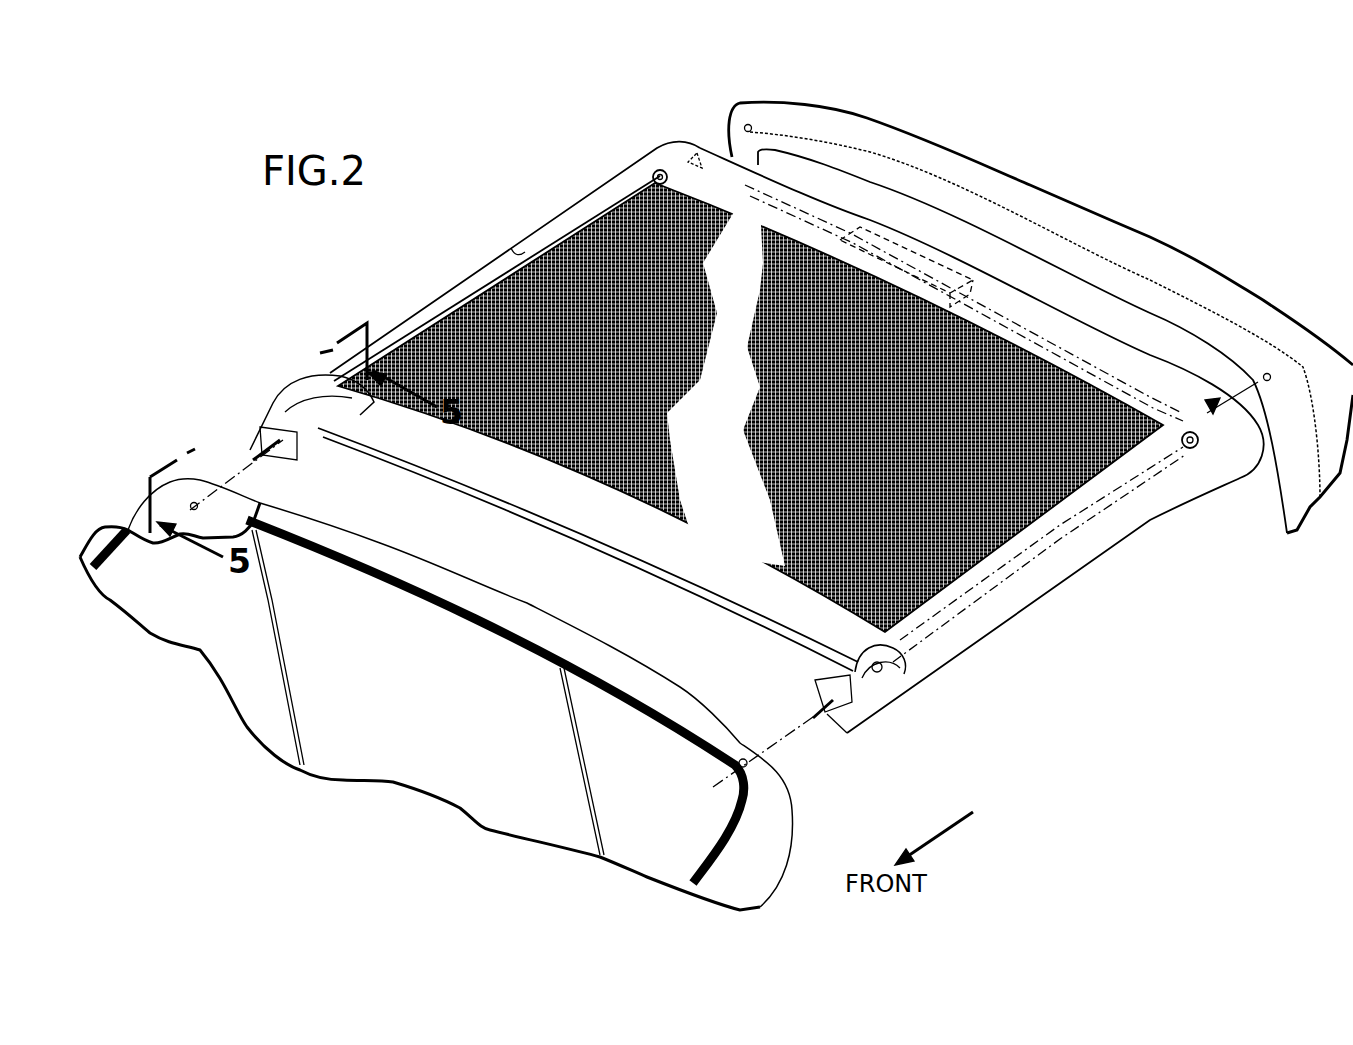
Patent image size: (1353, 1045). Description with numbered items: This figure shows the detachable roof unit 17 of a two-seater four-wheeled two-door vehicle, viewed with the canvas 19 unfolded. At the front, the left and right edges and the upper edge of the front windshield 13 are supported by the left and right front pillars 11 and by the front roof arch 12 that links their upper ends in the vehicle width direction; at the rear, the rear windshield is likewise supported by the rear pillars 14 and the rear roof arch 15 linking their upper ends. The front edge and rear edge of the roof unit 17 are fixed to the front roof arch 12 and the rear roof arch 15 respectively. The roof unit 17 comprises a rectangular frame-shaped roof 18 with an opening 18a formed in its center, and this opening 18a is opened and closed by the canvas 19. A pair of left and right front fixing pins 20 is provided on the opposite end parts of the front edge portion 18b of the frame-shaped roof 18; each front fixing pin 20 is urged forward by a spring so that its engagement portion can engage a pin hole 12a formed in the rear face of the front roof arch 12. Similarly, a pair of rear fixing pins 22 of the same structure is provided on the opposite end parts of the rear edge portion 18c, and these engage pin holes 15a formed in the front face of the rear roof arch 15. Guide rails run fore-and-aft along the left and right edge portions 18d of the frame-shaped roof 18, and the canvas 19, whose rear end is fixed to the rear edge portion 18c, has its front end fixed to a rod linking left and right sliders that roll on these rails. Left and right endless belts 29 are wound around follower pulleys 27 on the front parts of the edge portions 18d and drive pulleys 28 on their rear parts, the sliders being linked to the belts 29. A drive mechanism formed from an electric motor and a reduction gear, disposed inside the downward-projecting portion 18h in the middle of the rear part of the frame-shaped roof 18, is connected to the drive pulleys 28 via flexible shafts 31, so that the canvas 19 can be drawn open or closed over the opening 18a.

The front pillar 11 is at (100, 540).
The front roof arch 12 is at (526, 609).
The pin hole 12a is at (197, 503).
The front windshield 13 is at (372, 757).
The rear pillar 14 is at (737, 147).
The rear roof arch 15 is at (1104, 210).
The pin hole 15a is at (750, 124).
The roof unit 17 is at (549, 208).
The frame-shaped roof 18 is at (1070, 580).
The opening 18a is at (516, 250).
The front edge portion 18b is at (530, 482).
The rear edge portion 18c is at (1127, 367).
The left and right edge portions 18d is at (453, 280).
The projecting portion 18h is at (912, 292).
The canvas 19 is at (603, 247).
The front fixing pin 20 is at (255, 457).
The rear fixing pin 22 is at (697, 153).
The follower pulley 27 is at (313, 397).
The drive pulley 28 is at (658, 168).
The endless belt 29 is at (323, 370).
The flexible shaft 31 is at (785, 207).